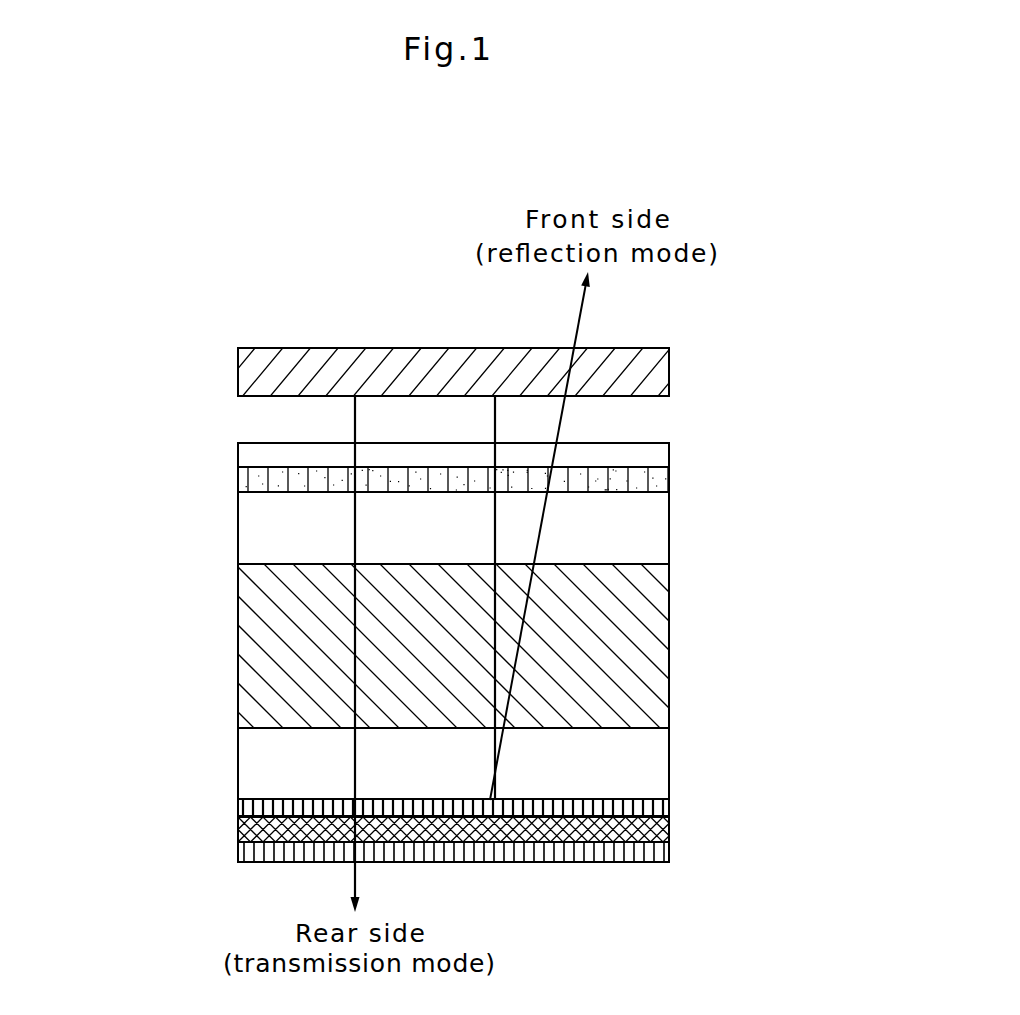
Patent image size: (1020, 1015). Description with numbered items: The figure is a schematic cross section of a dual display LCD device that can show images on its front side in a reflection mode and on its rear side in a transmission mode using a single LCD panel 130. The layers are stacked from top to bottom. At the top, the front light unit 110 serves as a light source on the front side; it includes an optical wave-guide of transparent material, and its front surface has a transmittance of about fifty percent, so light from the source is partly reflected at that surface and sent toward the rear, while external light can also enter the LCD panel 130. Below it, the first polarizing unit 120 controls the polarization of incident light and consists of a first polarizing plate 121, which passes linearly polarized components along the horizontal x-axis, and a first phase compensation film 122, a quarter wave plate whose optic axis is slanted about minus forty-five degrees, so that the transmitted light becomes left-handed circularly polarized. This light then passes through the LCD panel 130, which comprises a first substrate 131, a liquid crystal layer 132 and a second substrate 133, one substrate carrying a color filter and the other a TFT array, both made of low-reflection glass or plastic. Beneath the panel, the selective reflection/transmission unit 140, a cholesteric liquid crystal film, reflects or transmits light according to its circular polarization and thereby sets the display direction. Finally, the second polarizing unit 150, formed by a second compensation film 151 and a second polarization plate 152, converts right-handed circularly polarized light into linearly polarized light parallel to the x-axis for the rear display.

The front light unit 110 is at (669, 371).
The first polarizing unit 120 is at (822, 440).
The first polarizing plate 121 is at (669, 455).
The first phase compensation film 122 is at (669, 481).
The liquid crystal display (LCD) panel 130 is at (823, 550).
The first substrate 131 is at (669, 530).
The liquid crystal layer 132 is at (669, 645).
The second substrate 133 is at (669, 764).
The selective reflection/transmission unit 140 is at (669, 808).
The second polarizing unit 150 is at (92, 810).
The second compensation film 151 is at (238, 828).
The second polarization plate 152 is at (238, 852).